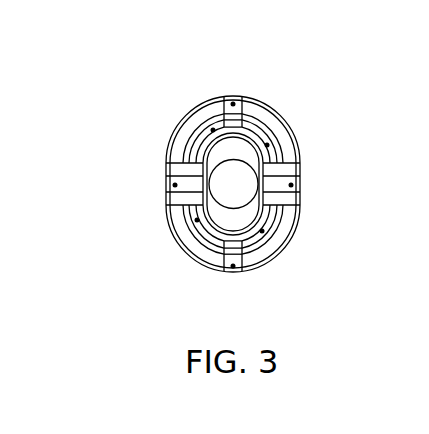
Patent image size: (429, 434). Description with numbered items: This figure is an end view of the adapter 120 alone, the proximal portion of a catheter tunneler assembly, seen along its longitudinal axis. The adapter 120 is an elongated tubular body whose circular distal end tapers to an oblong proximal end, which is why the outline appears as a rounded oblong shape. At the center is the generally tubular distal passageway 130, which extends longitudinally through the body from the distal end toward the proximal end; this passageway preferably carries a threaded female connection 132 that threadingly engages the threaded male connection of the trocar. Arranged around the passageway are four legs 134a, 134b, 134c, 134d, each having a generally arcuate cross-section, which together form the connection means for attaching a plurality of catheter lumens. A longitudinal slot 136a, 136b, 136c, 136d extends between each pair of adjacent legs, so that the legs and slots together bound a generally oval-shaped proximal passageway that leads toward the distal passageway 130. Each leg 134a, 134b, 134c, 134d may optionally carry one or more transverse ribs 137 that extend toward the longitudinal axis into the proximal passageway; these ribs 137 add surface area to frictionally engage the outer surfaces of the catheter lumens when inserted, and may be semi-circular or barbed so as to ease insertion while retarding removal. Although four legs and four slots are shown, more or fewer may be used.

The adapter 120 is at (264, 63).
The distal passageway 130 is at (242, 200).
The threaded female connection 132 is at (198, 158).
The leg 134a is at (292, 112).
The leg 134b is at (301, 255).
The leg 134c is at (180, 264).
The leg 134d is at (173, 114).
The longitudinal slot 136a is at (233, 104).
The longitudinal slot 136b is at (291, 185).
The longitudinal slot 136c is at (233, 266).
The longitudinal slot 136d is at (175, 185).
The transverse ribs 137 is at (213, 130).